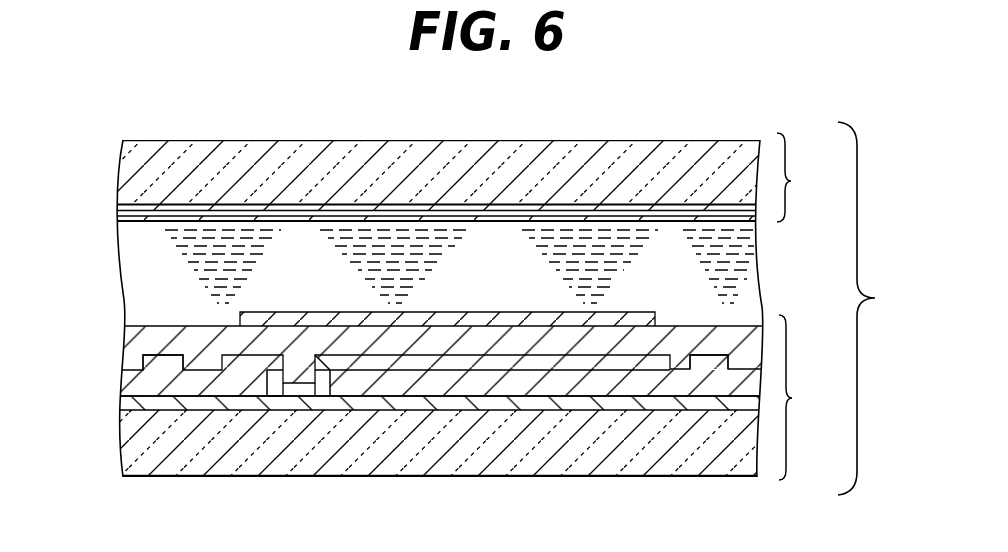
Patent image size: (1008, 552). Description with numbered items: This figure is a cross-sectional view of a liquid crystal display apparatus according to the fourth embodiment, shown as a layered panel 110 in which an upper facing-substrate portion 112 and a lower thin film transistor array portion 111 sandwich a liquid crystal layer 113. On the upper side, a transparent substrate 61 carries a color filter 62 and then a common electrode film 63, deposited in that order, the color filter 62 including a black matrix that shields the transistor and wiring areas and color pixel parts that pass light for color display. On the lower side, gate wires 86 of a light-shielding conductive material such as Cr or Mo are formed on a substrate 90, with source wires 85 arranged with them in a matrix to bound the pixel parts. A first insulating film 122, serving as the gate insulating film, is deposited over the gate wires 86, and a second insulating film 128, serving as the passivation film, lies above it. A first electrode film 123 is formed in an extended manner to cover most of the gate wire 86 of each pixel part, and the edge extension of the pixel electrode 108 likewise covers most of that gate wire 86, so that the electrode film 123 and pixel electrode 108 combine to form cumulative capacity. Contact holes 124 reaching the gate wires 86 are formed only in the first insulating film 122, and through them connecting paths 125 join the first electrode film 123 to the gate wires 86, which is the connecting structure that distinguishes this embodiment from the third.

The transparent substrate 61 is at (413, 149).
The color filter 62 is at (500, 209).
The common electrode film 63 is at (612, 219).
The liquid crystal layer 113 is at (732, 260).
The counter substrate 112 is at (804, 177).
The TFT array substrate 111 is at (804, 397).
The liquid crystal display panel 110 is at (876, 308).
The pixel electrode 108 is at (378, 320).
The second insulating film 128 is at (141, 345).
The source wire 85 is at (150, 363).
The first insulating film 122 is at (131, 386).
The first electrode film 123 is at (480, 373).
The contact hole 124 is at (323, 384).
The connecting path 125 is at (275, 384).
The gate wire 86 is at (129, 404).
The substrate 90 is at (560, 450).